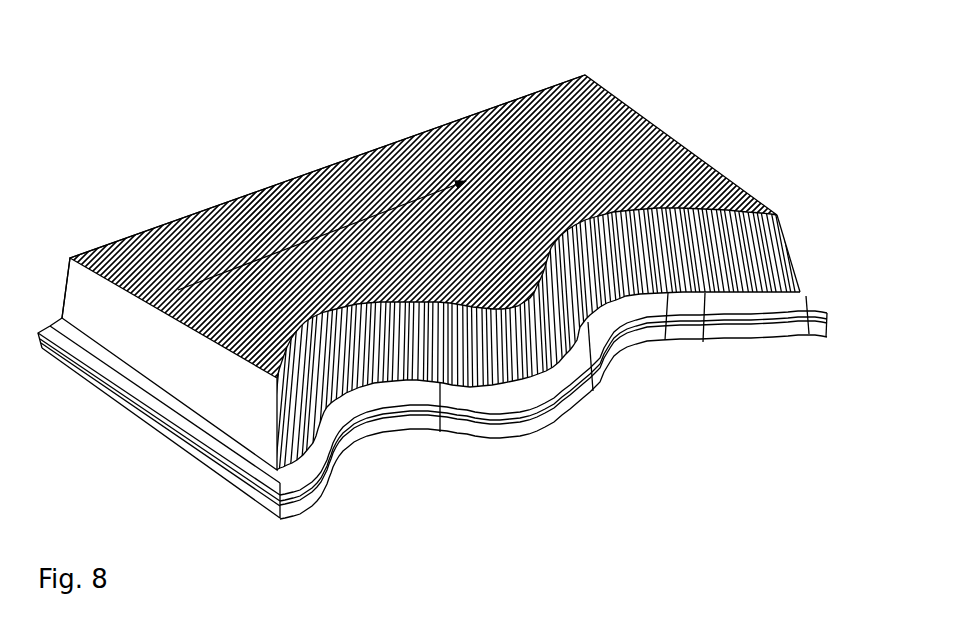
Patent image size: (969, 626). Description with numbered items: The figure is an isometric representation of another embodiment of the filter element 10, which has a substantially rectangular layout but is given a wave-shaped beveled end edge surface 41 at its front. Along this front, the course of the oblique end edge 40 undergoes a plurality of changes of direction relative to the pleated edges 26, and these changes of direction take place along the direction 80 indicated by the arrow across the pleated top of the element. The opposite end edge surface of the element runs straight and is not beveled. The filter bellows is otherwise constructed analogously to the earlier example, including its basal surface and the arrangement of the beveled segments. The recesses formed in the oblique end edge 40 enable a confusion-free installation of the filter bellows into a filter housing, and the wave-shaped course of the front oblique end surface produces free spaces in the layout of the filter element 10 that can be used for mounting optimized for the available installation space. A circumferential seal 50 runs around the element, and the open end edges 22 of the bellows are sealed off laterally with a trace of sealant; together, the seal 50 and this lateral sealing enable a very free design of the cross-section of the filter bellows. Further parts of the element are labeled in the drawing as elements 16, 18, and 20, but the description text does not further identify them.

The filter element 10 is at (626, 70).
The upstream face of filter media 16 is at (108, 258).
The frame / base 18 is at (320, 519).
The filter media pack 20 is at (699, 138).
The open end edges 22 is at (253, 196).
The pleated edges 26 is at (528, 94).
The end edge 40 is at (716, 231).
The end edge surface 41 is at (375, 140).
The circumferential seal 50 is at (768, 334).
The direction 80 is at (322, 235).